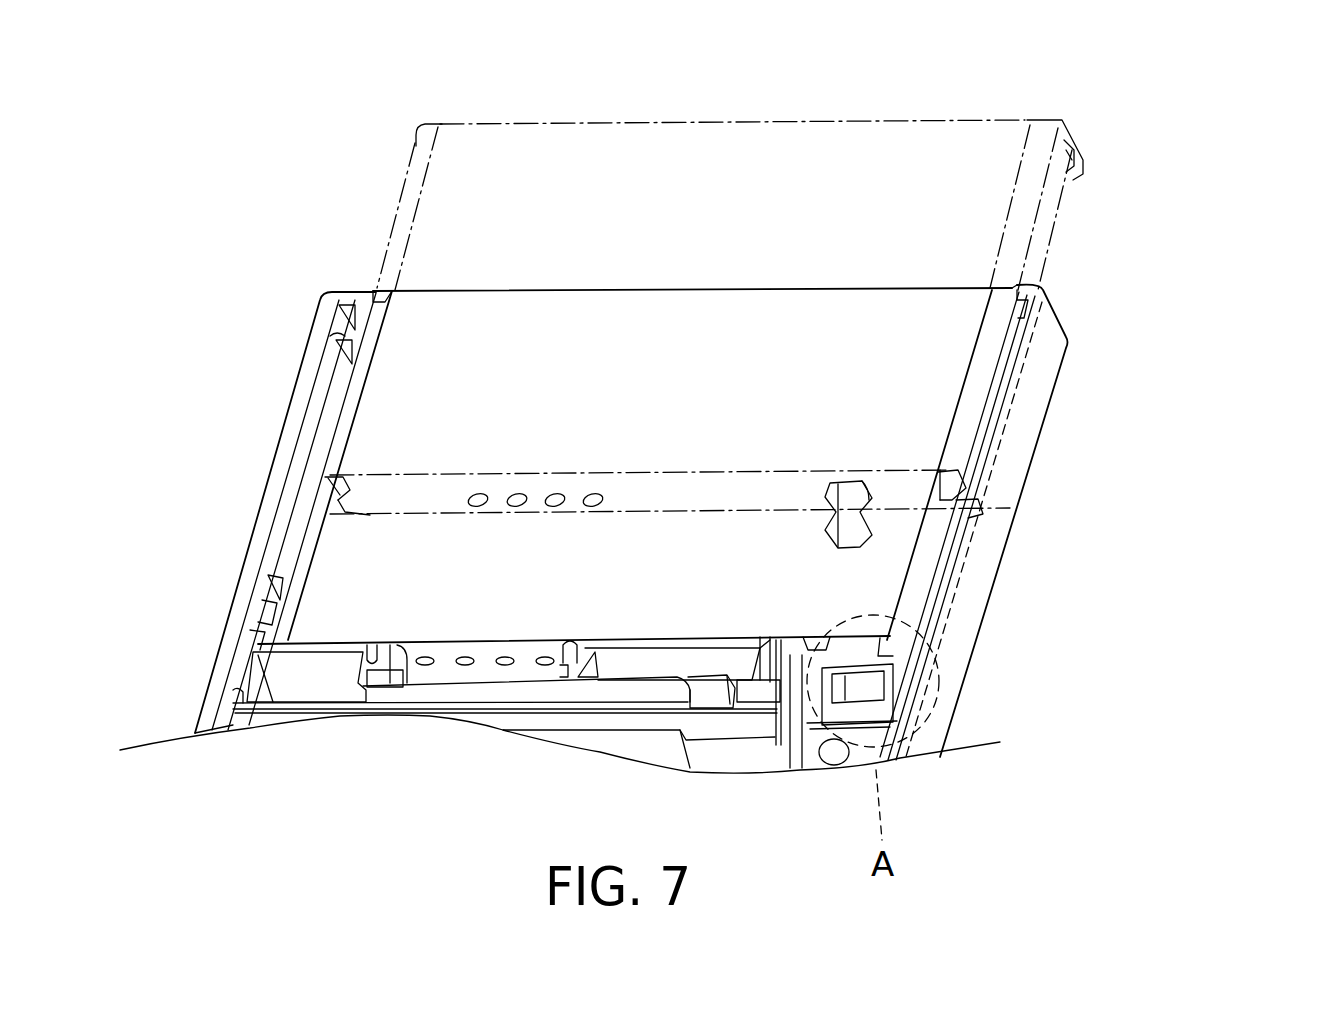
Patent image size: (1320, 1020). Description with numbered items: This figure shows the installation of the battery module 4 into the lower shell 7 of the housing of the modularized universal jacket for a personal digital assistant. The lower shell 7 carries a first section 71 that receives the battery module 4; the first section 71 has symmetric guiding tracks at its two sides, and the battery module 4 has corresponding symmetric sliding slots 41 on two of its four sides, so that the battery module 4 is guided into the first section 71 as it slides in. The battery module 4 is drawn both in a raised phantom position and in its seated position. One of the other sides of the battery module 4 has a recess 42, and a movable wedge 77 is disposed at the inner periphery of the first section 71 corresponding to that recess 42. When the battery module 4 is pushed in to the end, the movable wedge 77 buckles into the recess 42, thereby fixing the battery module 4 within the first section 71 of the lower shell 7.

The battery module 4 is at (1022, 118).
The sliding slots 41 is at (1075, 140).
The recess 42 is at (1010, 508).
The lower shell 7 is at (1073, 381).
The first section 71 is at (340, 417).
The movable wedge 77 is at (883, 657).